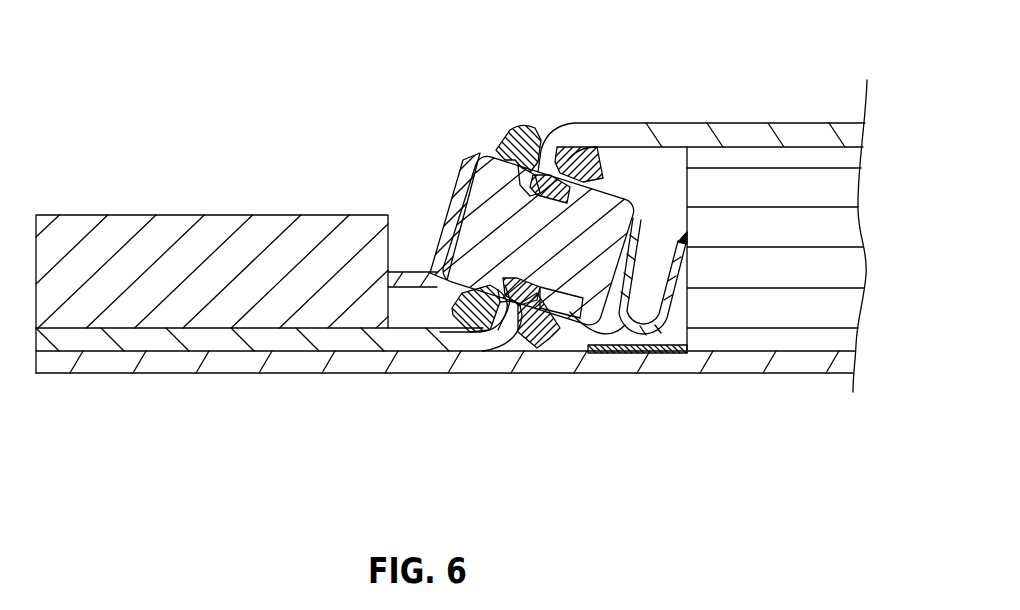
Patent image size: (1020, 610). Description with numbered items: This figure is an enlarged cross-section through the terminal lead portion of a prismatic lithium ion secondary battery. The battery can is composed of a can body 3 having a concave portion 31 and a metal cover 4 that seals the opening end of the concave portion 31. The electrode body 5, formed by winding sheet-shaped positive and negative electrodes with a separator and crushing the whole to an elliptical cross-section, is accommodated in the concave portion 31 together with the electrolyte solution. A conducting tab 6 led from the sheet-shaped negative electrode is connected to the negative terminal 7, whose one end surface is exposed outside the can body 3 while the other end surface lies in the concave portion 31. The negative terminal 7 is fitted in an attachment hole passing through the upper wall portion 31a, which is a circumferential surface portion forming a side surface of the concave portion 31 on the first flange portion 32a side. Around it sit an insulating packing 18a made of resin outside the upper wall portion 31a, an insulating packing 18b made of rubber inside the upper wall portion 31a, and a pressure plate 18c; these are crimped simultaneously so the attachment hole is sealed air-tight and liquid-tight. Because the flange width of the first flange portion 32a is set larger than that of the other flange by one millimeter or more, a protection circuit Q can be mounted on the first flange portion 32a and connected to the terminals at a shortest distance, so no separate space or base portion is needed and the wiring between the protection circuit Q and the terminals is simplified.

The protection circuit Q is at (206, 215).
The can body 3 is at (789, 100).
The metal cover 4 is at (737, 358).
The electrode body 5 is at (850, 232).
The conducting tab 6 is at (647, 328).
The negative terminal 7 is at (492, 225).
The insulating packing 18a is at (510, 130).
The insulating packing 18b is at (590, 147).
The pressure plate 18c is at (548, 350).
The concave portion 31 is at (760, 147).
The upper wall portion 31a is at (498, 333).
The first flange portion 32a is at (250, 330).